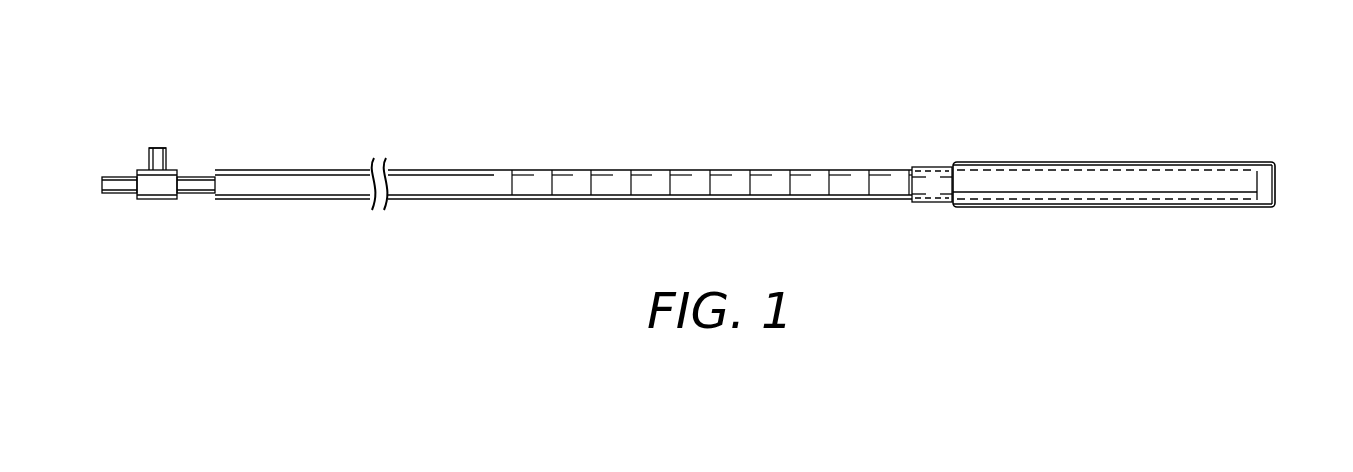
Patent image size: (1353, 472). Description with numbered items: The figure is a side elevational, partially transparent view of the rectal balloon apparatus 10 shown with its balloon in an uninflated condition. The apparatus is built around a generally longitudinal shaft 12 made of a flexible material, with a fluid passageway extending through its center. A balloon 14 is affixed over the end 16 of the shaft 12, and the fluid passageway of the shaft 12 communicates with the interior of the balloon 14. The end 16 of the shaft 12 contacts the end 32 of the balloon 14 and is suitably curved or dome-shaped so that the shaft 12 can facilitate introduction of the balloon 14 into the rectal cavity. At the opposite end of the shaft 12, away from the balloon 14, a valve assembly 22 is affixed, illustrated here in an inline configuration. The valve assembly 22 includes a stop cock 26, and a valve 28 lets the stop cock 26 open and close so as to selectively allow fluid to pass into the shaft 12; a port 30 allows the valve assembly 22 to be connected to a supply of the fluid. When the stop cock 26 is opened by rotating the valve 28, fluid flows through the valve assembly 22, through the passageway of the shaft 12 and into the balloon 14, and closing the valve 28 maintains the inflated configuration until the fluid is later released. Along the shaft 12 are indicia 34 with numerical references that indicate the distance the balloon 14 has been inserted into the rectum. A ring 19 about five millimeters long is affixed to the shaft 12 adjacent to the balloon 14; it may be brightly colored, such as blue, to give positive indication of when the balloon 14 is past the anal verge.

The rectal balloon apparatus 10 is at (928, 112).
The shaft 12 is at (472, 170).
The balloon 14 is at (1205, 162).
The end 16 is at (1258, 187).
The ring 19 is at (930, 203).
The valve assembly 22 is at (158, 149).
The stop cock 26 is at (150, 200).
The valve 28 is at (149, 156).
The port 30 is at (122, 193).
The end 32 is at (1277, 185).
The indicia 34 is at (630, 170).